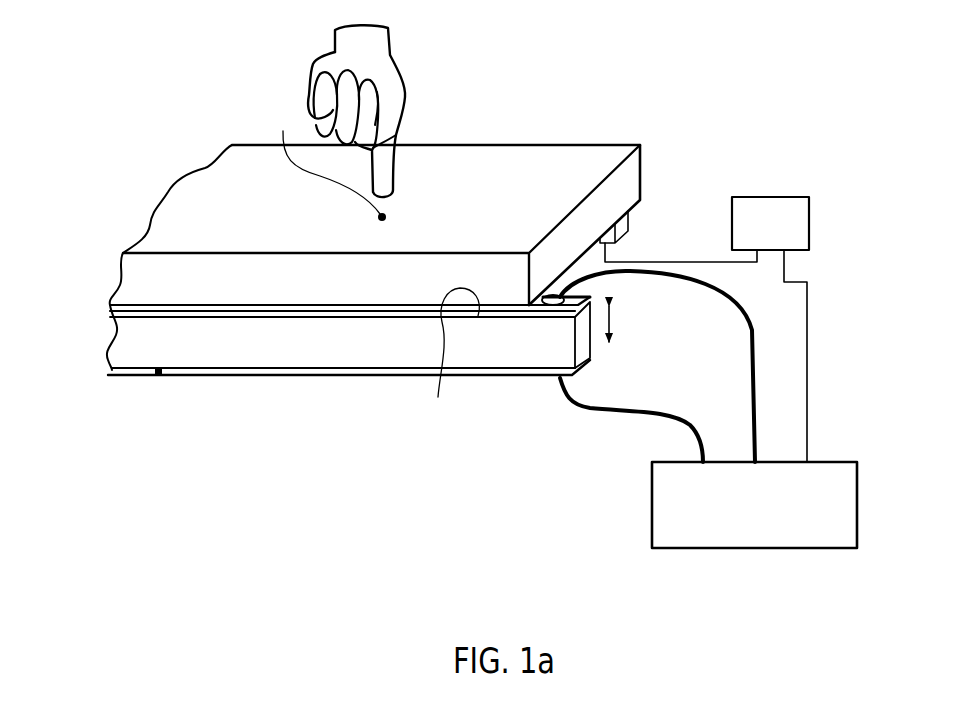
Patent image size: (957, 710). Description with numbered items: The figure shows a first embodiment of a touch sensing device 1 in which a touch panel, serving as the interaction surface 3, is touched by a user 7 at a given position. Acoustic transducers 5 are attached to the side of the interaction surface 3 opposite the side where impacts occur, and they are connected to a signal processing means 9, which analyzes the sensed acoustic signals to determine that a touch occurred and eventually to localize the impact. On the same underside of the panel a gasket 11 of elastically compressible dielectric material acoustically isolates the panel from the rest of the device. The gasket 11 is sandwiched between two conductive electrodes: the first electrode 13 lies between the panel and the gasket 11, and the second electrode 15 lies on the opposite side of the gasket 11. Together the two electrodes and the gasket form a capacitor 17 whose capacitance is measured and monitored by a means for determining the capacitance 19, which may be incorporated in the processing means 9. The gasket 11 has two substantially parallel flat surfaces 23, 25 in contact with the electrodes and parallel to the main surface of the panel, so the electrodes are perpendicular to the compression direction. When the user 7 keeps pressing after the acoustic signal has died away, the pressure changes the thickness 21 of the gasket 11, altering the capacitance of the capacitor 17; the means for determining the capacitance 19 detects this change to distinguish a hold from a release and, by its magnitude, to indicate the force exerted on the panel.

The touch sensing device 1 is at (243, 96).
The interaction surface 3 is at (468, 212).
The acoustic transducers 5 is at (630, 223).
The user 7 is at (327, 56).
The signal processing means 9 is at (790, 197).
The gasket 11 is at (260, 357).
The first electrode 13 is at (108, 306).
The second electrode 15 is at (155, 373).
The capacitor 17 is at (92, 312).
The means for determining the capacitance 19 is at (652, 532).
The thickness 21 is at (612, 322).
The flat surface 23 is at (451, 354).
The flat surface 25 is at (496, 380).